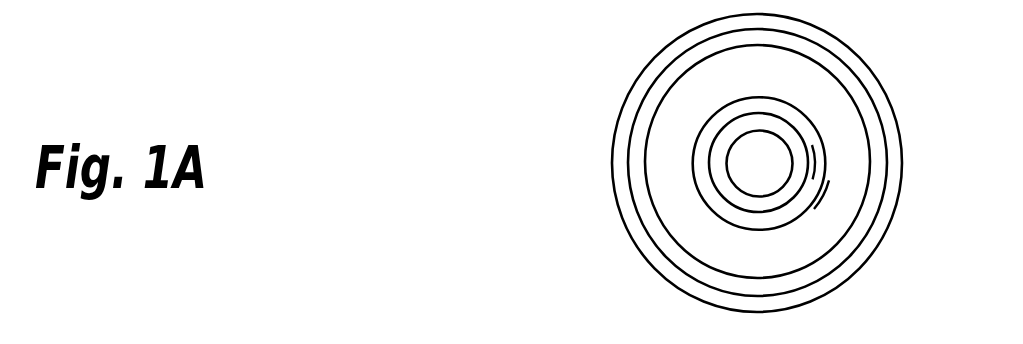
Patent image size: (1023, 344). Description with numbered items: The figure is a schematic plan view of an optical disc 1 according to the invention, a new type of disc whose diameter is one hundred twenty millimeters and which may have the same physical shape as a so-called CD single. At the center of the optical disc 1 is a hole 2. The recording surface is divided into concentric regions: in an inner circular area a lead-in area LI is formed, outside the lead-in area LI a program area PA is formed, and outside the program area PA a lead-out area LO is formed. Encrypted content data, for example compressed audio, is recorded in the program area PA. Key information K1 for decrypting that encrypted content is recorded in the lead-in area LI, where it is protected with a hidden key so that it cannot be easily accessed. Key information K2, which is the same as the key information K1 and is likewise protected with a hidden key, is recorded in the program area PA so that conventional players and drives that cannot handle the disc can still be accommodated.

The optical disc 1 is at (736, 163).
The hole 2 is at (728, 163).
The lead-out area LO is at (832, 54).
The program area PA is at (840, 102).
The key information K1 is at (818, 157).
The key information K2 is at (832, 196).
The lead-in area LI is at (783, 212).